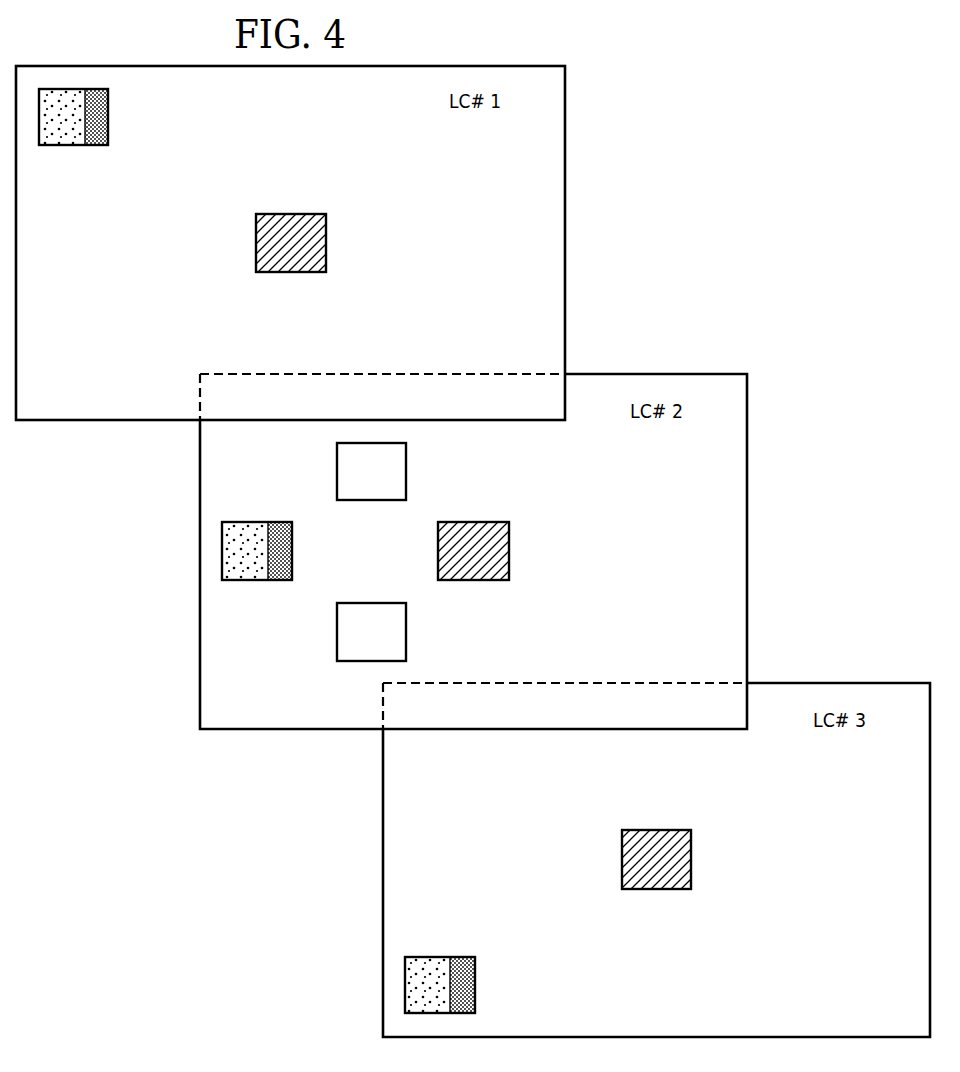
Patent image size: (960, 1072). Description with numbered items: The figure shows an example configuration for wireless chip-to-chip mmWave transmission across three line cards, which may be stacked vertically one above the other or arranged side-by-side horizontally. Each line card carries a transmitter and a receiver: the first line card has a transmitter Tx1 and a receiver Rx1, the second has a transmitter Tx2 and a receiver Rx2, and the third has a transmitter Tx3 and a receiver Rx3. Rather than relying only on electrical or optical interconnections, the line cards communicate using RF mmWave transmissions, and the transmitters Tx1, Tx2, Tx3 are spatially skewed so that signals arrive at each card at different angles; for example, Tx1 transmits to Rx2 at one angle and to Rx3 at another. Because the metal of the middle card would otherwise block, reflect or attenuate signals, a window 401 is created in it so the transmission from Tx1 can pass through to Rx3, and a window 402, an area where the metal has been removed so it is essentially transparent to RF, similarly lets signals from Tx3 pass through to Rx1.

The window 401 is at (337, 470).
The window 402 is at (337, 631).
The transmitter Tx1 is at (94, 117).
The receiver Rx1 is at (312, 243).
The transmitter Tx2 is at (278, 551).
The receiver Rx2 is at (495, 551).
The transmitter Tx3 is at (461, 985).
The receiver Rx3 is at (678, 859).